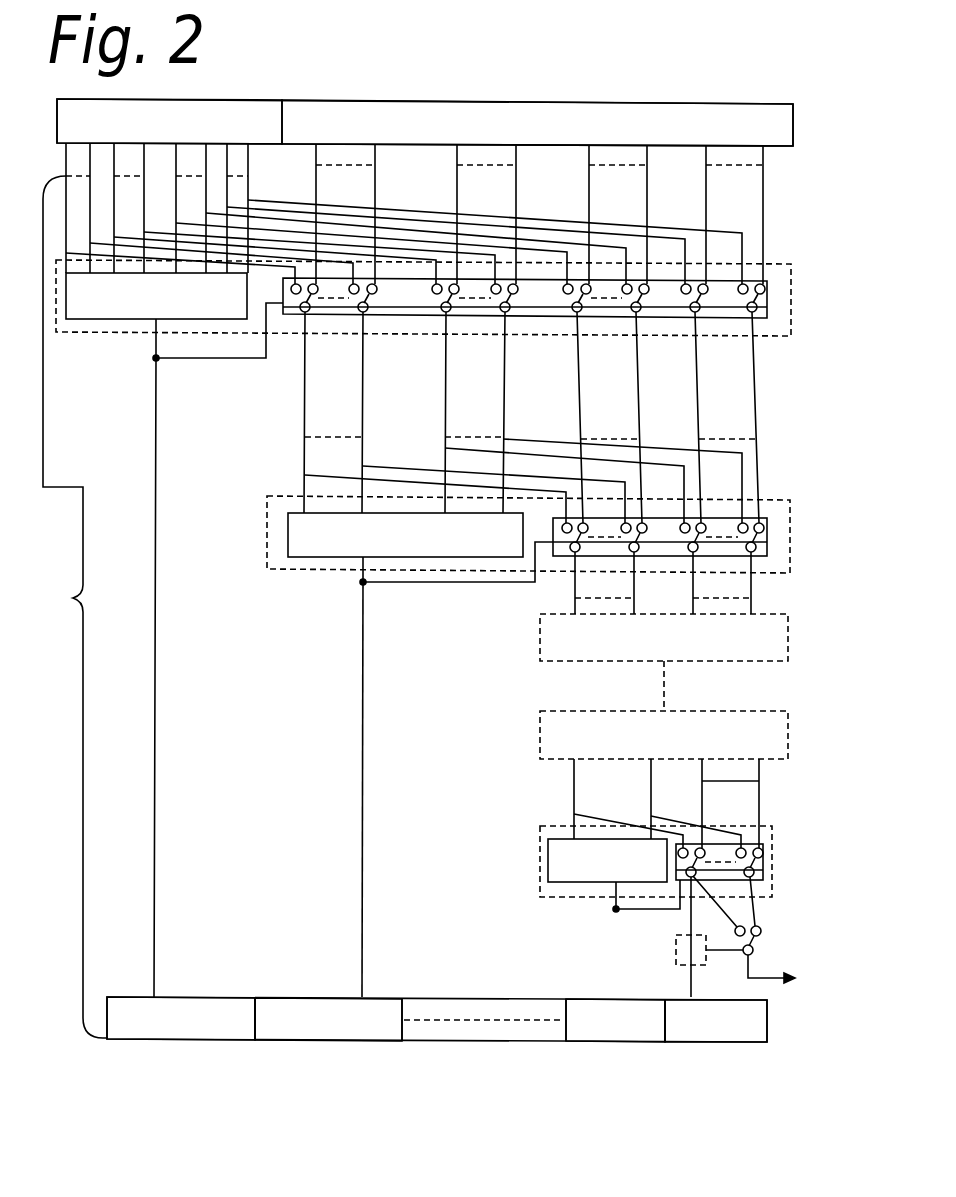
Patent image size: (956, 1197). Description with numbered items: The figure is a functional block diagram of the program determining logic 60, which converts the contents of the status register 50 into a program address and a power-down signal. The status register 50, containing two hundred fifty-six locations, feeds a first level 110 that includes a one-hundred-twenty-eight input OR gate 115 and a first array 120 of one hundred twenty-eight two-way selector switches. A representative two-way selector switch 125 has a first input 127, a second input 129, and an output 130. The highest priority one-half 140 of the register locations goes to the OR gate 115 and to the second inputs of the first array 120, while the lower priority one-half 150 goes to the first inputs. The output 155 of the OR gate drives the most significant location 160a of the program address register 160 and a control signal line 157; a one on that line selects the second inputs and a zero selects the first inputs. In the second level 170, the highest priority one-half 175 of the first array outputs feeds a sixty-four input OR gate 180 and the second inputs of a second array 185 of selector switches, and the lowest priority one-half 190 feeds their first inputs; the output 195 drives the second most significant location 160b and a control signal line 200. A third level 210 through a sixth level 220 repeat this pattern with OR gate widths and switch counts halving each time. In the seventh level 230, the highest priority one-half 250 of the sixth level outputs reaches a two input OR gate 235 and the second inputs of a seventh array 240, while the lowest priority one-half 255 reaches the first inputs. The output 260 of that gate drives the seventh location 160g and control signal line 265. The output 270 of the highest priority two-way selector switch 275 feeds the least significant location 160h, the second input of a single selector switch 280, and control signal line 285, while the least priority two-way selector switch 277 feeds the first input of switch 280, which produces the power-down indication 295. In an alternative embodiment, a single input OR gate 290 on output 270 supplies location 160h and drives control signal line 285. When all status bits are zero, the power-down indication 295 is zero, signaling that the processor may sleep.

The status register 50 is at (733, 103).
The program determining logic 60 is at (75, 607).
The first level 110 is at (56, 333).
The 128 input OR gate 115 is at (130, 320).
The first array of two-way selector switches 120 is at (767, 292).
The two-way selector switch 125 is at (770, 312).
The first input 127 is at (762, 284).
The second input 129 is at (745, 283).
The output 130 is at (755, 313).
The highest priority one-half of the locations 140 is at (149, 134).
The lower priority one-half of the locations 150 is at (484, 134).
The output of the 128 input OR gate 155 is at (156, 480).
The control signal line 157 is at (215, 358).
The program address register 160 is at (128, 997).
The most significant location 160a is at (160, 1033).
The second MSL 160b is at (309, 1033).
The seventh MSL 160g is at (598, 1033).
The least significant location 160h is at (701, 1033).
The second level 170 is at (267, 538).
The highest priority one-half of the outputs of the first array 175 is at (306, 355).
The 64 input OR gate 180 is at (305, 558).
The second array of two-way selector switches 185 is at (767, 530).
The lowest priority one-half of the outputs of the first array 190 is at (580, 358).
The output of the 64 input OR gate 195 is at (364, 656).
The control signal line 200 is at (508, 588).
The third level 210 is at (540, 635).
The sixth level 220 is at (540, 727).
The seventh level 230 is at (540, 836).
The two input OR gate 235 is at (548, 862).
The seventh array of two-way selector switches 240 is at (763, 862).
The highest priority one-half of the outputs from the sixth level 250 is at (574, 783).
The lowest priority one-half of the outputs of the sixth level 255 is at (764, 785).
The output of the two input OR gate 260 is at (690, 912).
The control signal line 265 is at (632, 905).
The output of the highest priority two-way selector switch 270 is at (703, 890).
The highest priority two-way selector switch 275 is at (697, 843).
The least priority two-way selector switch 277 is at (768, 846).
The single selector switch 280 is at (762, 936).
The control signal line 285 is at (733, 950).
The single input OR gate 290 is at (676, 950).
The power-down indication 295 is at (773, 983).